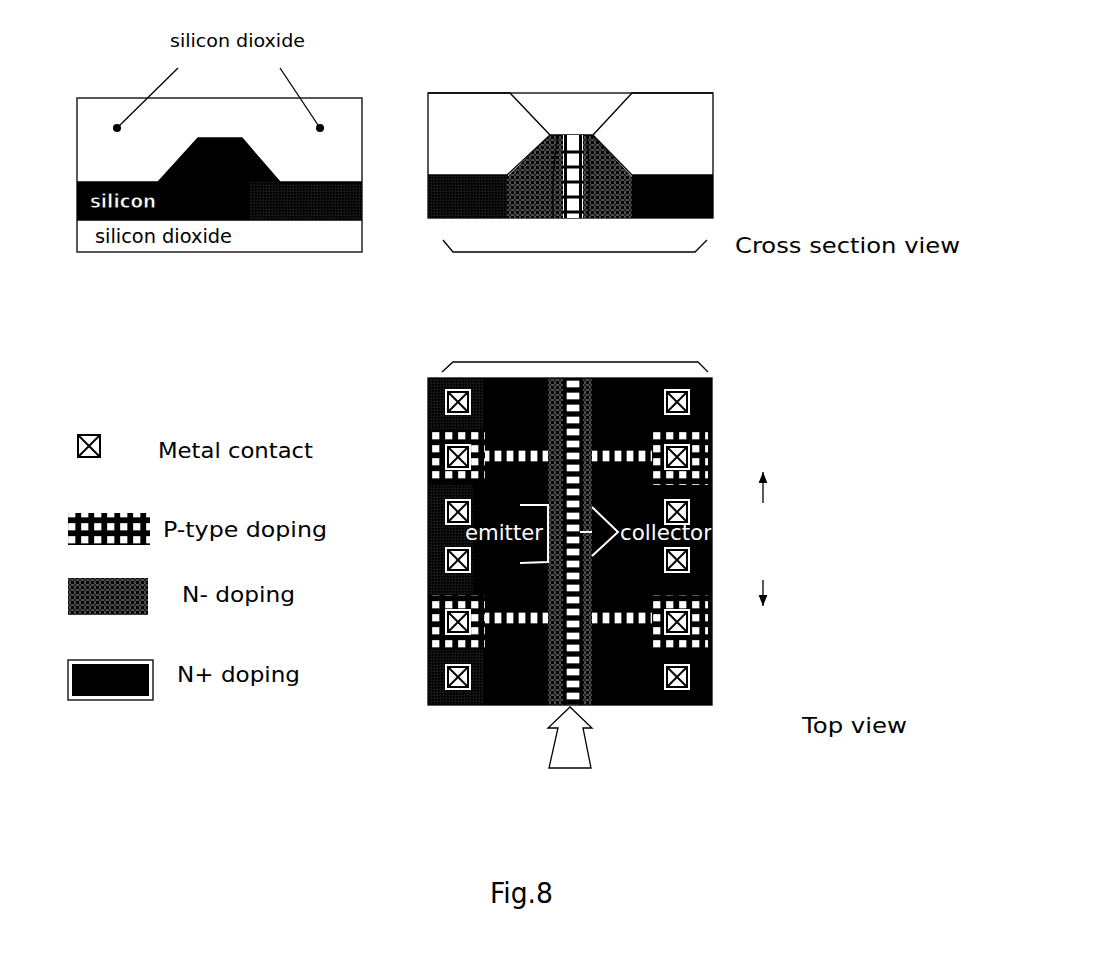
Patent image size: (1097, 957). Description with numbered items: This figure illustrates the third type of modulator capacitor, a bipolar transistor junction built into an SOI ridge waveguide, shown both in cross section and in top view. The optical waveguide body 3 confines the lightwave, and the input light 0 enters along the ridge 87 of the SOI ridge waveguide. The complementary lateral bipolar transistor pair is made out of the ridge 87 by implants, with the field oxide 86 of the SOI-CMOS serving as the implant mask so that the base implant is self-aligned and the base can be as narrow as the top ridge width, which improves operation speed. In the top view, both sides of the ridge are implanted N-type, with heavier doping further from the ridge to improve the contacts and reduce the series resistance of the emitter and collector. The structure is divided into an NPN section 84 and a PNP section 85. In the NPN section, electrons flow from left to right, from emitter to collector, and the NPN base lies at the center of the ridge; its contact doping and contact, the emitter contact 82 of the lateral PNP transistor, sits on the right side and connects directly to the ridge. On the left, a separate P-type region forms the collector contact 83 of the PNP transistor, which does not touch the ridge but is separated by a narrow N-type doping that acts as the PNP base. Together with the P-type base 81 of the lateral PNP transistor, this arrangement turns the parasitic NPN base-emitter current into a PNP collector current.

The input light 0 is at (582, 772).
The optical waveguide body 3 is at (572, 357).
The base of the lateral PNP bipolar transistor 81 is at (553, 665).
The emitter contact of the lateral PNP transistor 82 is at (706, 431).
The collector contact of the lateral PNP transistor 83 is at (443, 433).
The NPN section of the waveguide capacitor 84 is at (810, 530).
The PNP section of the waveguide capacitor 85 is at (788, 445).
The field oxide of the SOI-CMOS 86 is at (630, 125).
The ridge of the SOI ridge waveguide 87 is at (230, 168).